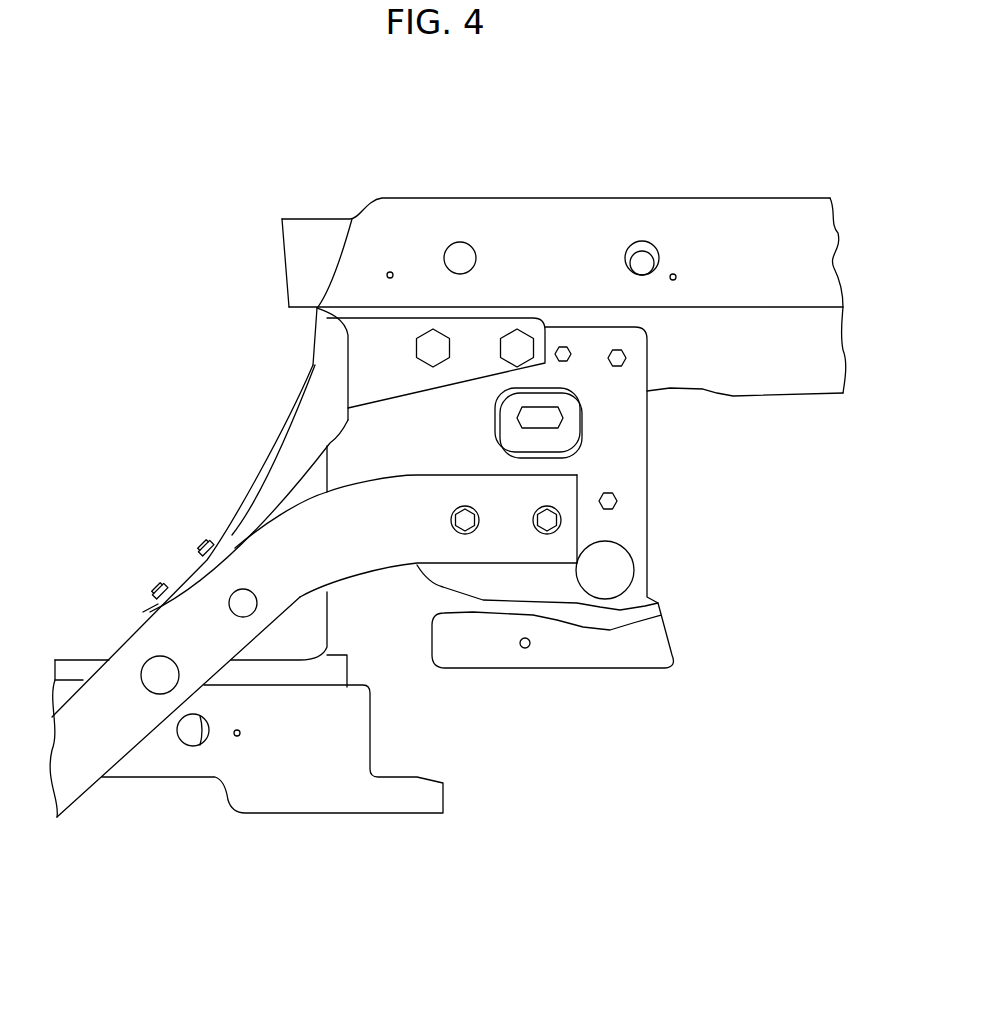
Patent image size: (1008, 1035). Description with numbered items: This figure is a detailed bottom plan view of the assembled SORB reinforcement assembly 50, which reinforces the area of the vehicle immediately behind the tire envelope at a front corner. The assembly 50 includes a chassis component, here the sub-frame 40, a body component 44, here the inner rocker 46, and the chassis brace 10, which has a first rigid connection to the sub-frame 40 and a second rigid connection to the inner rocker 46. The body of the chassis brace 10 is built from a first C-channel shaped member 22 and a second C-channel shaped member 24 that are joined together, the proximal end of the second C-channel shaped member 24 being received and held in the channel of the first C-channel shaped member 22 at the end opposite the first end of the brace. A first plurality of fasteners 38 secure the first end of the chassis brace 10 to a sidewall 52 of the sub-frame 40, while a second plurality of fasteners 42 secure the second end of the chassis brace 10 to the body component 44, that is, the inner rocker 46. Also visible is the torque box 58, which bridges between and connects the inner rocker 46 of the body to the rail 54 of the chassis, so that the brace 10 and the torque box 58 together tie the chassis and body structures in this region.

The chassis brace 10 is at (201, 369).
The first C-channel shaped member 22 is at (290, 468).
The second C-channel shaped member 24 is at (475, 345).
The first plurality of fasteners 38 is at (203, 550).
The sub-frame 40 is at (83, 757).
The second plurality of fasteners 42 is at (432, 343).
The body component 44 is at (753, 373).
The inner rocker 46 is at (586, 332).
The SORB reinforcement assembly 50 is at (653, 112).
The sidewall 52 is at (133, 642).
The rail 54 is at (177, 760).
The torque box 58 is at (628, 525).